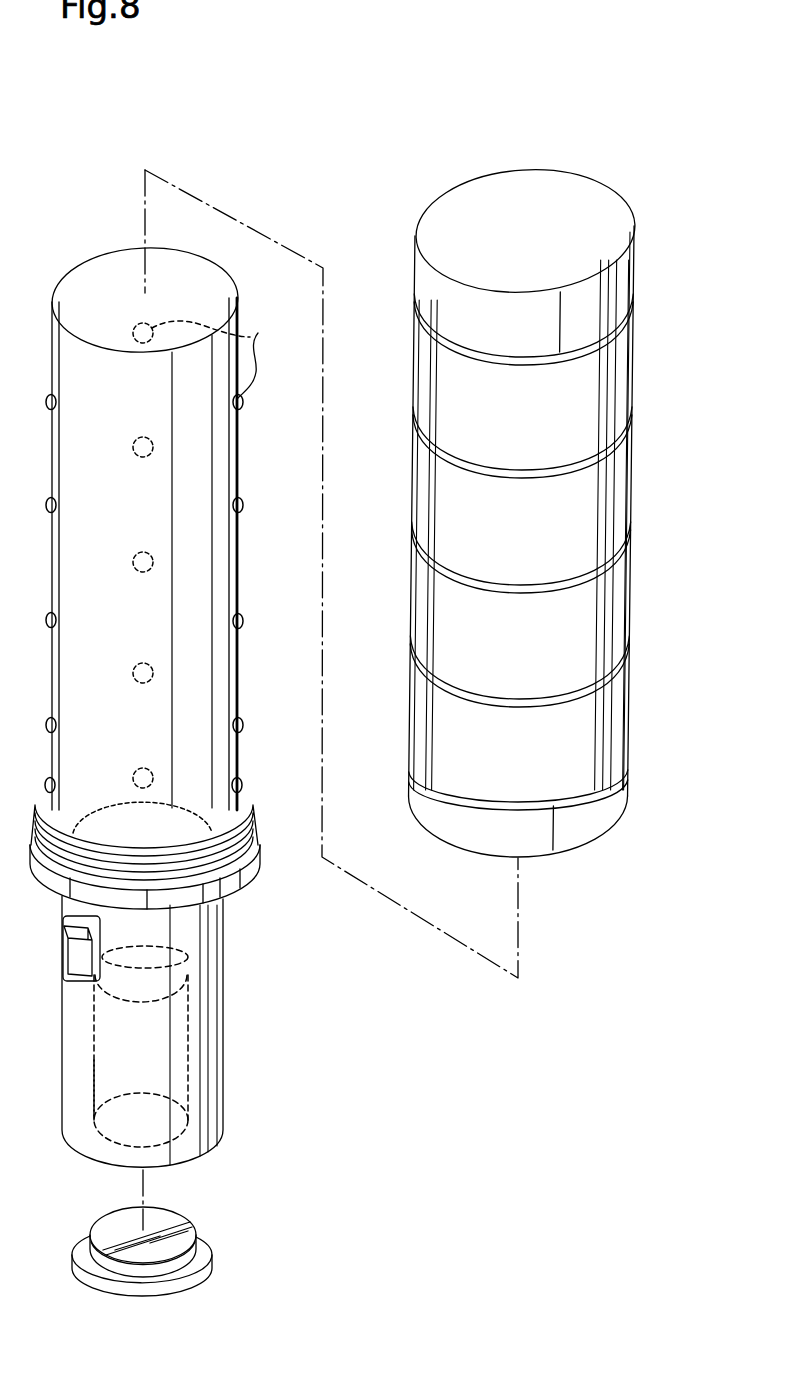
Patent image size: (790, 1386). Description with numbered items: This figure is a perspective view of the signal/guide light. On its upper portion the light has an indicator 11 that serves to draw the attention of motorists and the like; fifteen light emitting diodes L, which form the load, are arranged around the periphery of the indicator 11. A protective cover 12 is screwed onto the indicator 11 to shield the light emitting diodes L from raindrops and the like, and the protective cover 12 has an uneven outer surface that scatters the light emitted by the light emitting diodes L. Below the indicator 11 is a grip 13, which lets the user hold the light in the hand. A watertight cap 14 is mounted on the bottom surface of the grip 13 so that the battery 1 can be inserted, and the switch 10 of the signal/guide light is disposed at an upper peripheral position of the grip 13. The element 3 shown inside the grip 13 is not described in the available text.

The battery 1 is at (195, 1096).
The inner sleeve 3 is at (205, 950).
The switch 10 is at (73, 958).
The indicator 11 is at (250, 572).
The protective cover 12 is at (630, 279).
The grip 13 is at (231, 1025).
The watertight cap 14 is at (210, 1247).
The light emitting diodes L is at (218, 353).